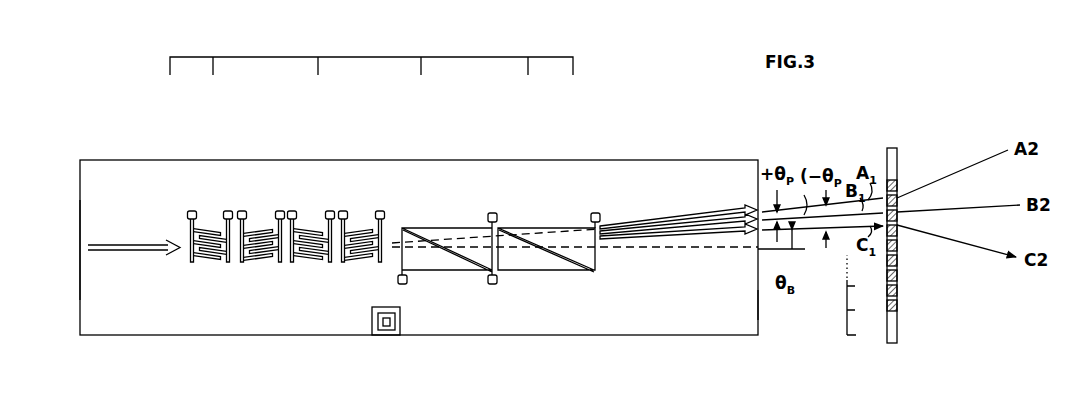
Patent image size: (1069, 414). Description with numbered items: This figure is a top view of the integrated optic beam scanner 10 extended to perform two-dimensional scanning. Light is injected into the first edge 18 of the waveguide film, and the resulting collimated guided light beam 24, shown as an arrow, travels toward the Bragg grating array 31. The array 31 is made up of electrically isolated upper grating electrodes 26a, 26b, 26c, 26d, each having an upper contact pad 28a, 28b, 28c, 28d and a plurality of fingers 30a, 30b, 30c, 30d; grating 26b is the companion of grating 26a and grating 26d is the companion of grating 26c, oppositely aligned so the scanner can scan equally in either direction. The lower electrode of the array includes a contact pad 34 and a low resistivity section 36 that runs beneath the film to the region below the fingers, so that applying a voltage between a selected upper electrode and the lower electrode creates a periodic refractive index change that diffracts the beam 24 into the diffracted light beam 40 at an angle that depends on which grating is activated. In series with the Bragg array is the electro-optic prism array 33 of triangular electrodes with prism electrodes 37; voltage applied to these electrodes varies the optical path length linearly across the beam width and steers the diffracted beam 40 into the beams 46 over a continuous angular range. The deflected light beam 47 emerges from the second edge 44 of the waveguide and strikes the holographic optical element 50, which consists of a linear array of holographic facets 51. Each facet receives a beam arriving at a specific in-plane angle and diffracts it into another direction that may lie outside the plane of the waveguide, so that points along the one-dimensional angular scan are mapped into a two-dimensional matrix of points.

The integrated optic beam scanner 10 is at (584, 160).
The first edge 18 is at (80, 283).
The guided light beam 24 is at (120, 250).
The upper grating electrode 26a is at (216, 172).
The upper grating electrode 26b is at (304, 172).
The upper grating electrode 26c is at (381, 172).
The upper grating electrode 26d is at (461, 172).
The upper contact pad 28a is at (227, 137).
The upper contact pad 28b is at (332, 137).
The upper contact pad 28c is at (437, 137).
The upper contact pad 28d is at (544, 137).
The fingers 30a is at (213, 233).
The fingers 30b is at (292, 197).
The fingers 30c is at (368, 197).
The fingers 30d is at (448, 197).
The Bragg grating array 31 is at (370, 57).
The electro-optic prism array 33 is at (568, 240).
The contact pad 34 is at (400, 321).
The low resistivity section 36 is at (372, 307).
The prism electrode 37 is at (600, 212).
The diffracted light beam 40 is at (395, 242).
The second edge 44 is at (760, 300).
The steered beams 46 is at (712, 215).
The deflected light beam 47 is at (801, 232).
The holographic optical element 50 is at (893, 340).
The holographic facets 51 is at (845, 332).